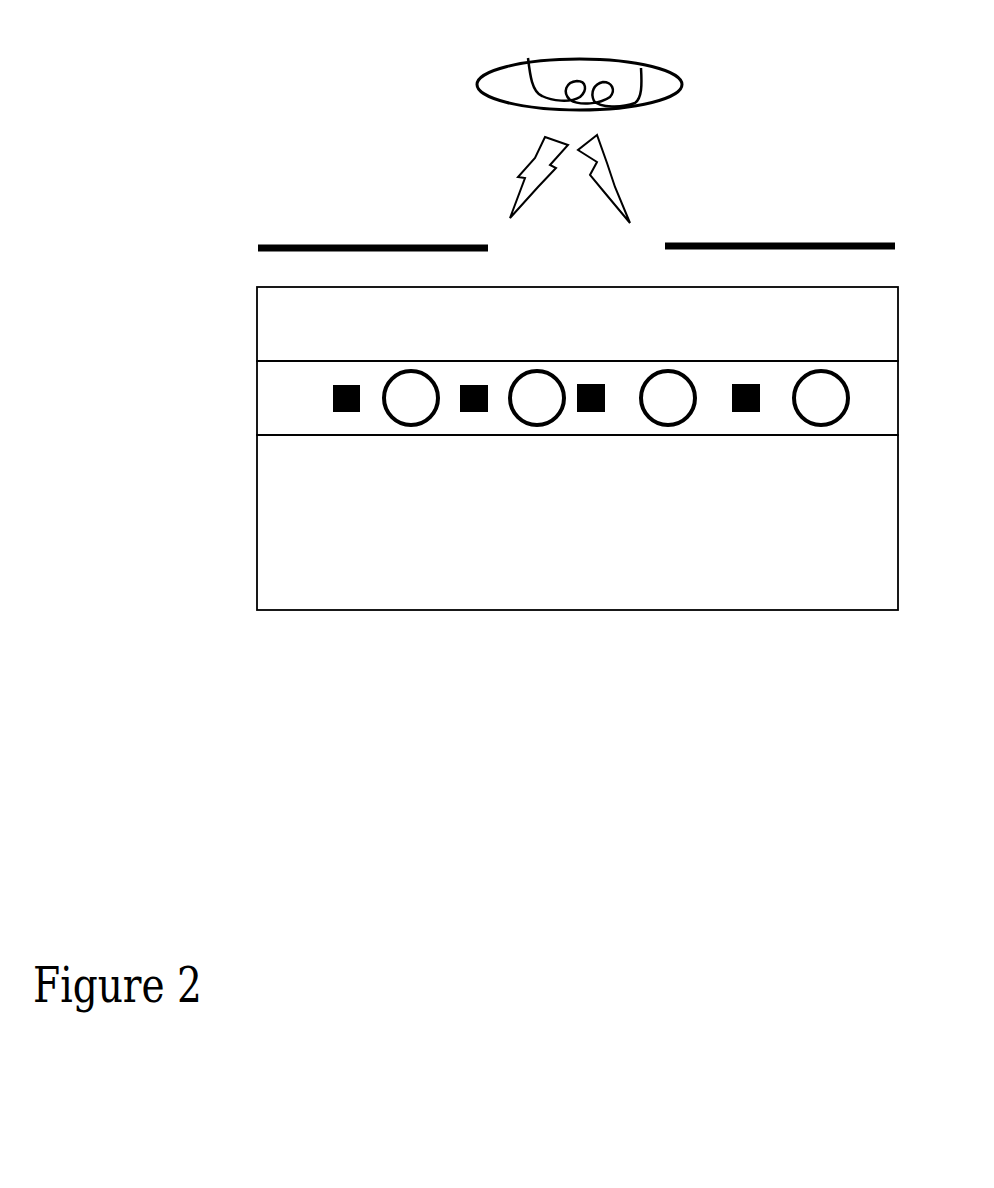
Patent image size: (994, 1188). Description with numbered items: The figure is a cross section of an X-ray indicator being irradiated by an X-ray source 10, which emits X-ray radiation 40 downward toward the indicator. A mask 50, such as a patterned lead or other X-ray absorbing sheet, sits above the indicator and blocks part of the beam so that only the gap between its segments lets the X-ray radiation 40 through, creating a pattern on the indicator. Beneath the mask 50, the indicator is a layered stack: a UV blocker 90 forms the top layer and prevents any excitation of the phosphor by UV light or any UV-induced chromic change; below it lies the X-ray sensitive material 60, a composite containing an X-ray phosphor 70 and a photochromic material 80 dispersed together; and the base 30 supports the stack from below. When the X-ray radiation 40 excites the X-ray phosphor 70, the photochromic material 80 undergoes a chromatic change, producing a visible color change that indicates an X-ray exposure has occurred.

The X-ray source 10 is at (477, 80).
The X-ray radiation 40 is at (520, 182).
The mask 50 is at (327, 252).
The UV blocker 90 is at (353, 320).
The X-ray sensitive material 60 is at (313, 395).
The X-ray phosphor 70 is at (474, 413).
The photochromic material 80 is at (547, 402).
The base 30 is at (350, 532).